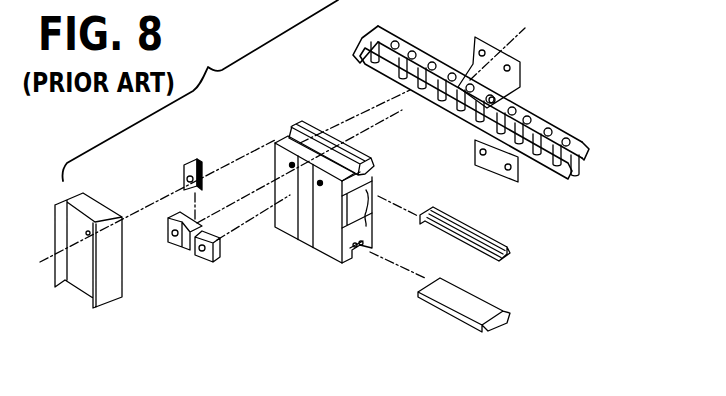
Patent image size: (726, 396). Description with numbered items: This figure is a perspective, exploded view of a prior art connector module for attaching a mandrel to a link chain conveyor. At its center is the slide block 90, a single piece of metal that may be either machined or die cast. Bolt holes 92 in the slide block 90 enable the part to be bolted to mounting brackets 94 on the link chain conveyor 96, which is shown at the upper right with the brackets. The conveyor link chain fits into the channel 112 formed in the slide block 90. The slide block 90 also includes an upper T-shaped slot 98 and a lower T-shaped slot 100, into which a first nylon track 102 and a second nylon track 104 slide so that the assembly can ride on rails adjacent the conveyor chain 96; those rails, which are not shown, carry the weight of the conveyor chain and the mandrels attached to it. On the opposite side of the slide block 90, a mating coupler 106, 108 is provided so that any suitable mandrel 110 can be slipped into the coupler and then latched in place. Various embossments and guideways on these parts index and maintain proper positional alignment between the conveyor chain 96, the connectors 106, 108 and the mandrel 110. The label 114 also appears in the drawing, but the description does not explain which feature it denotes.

The slide block 90 is at (367, 195).
The bolt holes 92 is at (292, 164).
The mounting brackets 94 is at (521, 64).
The link chain conveyor 96 is at (549, 125).
The upper T-shaped slot 98 is at (405, 185).
The lower T-shaped slot 100 is at (353, 249).
The nylon track 102 is at (507, 250).
The nylon track 104 is at (500, 316).
The mating coupler 106 is at (218, 262).
The mating coupler 108 is at (193, 162).
The mandrel 110 is at (122, 300).
The channel 112 is at (378, 196).
The groove 114 is at (307, 247).